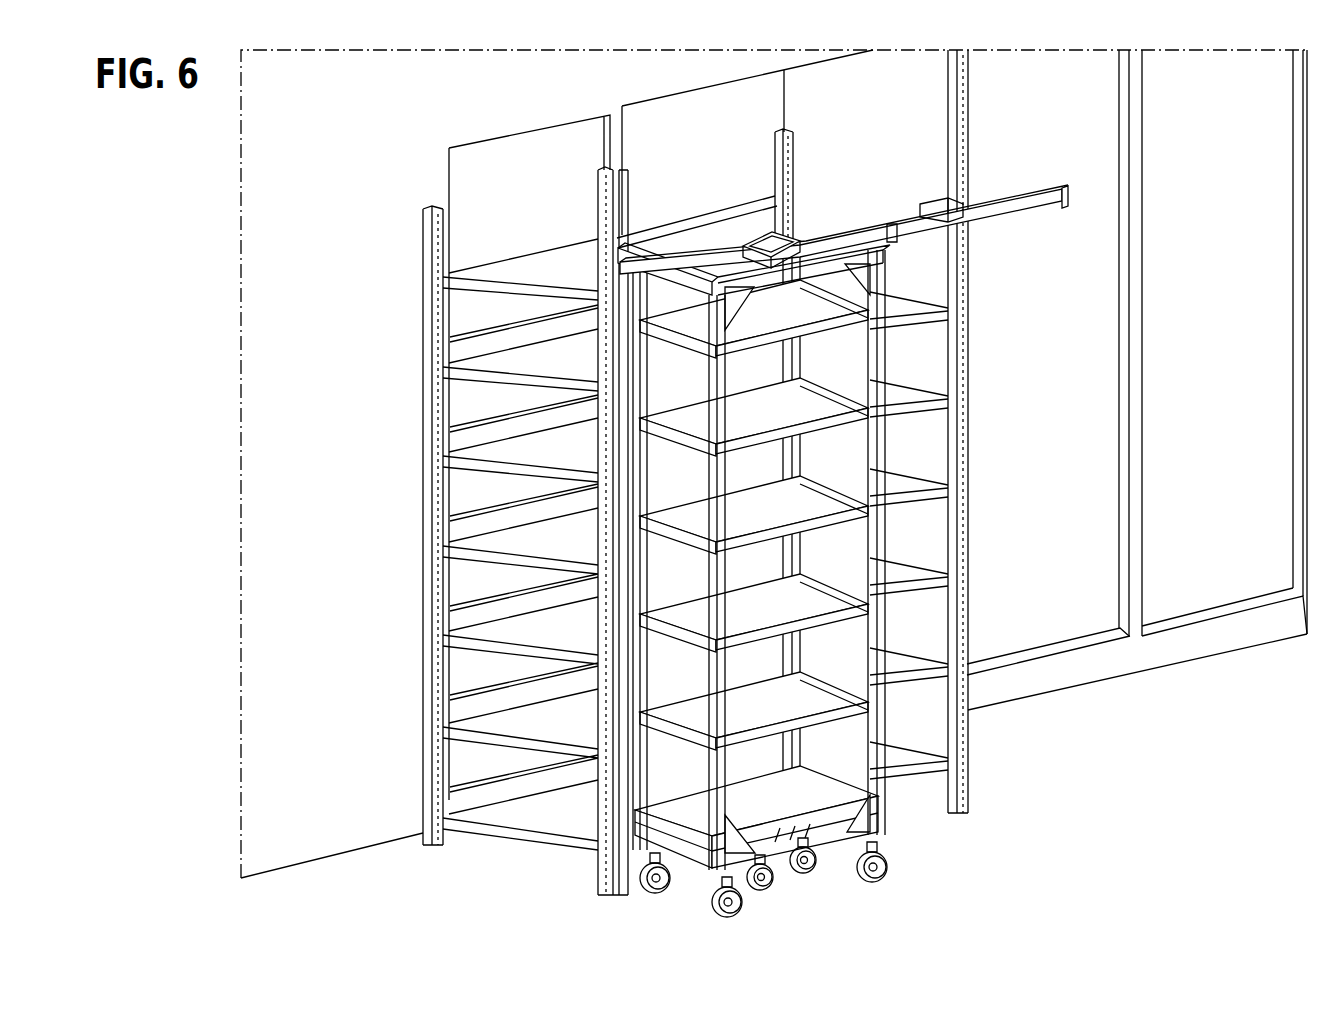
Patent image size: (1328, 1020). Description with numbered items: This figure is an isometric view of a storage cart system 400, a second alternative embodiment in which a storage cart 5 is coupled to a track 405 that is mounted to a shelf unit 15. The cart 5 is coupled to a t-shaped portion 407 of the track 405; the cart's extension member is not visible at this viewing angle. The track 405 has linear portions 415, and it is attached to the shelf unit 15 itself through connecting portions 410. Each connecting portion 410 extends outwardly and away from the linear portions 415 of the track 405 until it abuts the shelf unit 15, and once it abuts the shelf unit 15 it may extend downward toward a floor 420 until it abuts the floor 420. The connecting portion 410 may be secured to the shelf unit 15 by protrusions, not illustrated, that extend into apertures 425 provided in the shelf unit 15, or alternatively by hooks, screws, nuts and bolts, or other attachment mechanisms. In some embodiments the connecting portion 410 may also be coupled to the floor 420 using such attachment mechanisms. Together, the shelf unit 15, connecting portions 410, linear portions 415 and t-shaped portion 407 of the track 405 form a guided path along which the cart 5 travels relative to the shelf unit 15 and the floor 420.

The cart 5 is at (896, 555).
The shelf unit 15 is at (414, 512).
The system 400 is at (856, 230).
The track 405 is at (1031, 190).
The t-shaped portion 407 is at (770, 228).
The connecting portion 410 is at (618, 865).
The linear portion 415 is at (978, 228).
The floor 420 is at (967, 642).
The aperture 425 is at (981, 877).